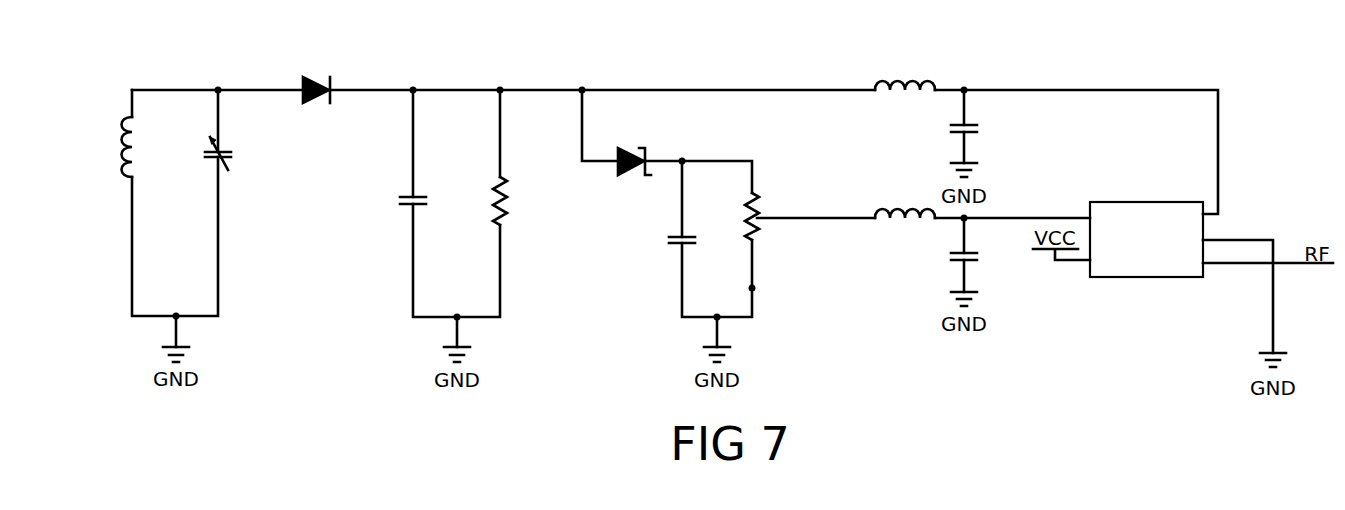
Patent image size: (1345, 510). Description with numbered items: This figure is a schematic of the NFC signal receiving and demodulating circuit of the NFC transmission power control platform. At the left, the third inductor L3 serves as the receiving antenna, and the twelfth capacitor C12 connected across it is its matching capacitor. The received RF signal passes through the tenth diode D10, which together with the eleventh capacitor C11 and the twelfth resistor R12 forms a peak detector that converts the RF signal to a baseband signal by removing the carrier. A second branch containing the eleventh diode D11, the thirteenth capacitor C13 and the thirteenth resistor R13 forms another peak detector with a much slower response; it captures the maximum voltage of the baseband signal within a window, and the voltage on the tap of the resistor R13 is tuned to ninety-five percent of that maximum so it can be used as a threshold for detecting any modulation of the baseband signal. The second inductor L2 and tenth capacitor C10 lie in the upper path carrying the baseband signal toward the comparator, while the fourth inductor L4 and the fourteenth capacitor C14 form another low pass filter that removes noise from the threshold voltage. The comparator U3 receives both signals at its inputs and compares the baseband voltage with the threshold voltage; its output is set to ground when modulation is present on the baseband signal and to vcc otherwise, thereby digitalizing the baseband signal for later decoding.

The third inductor L3 is at (142, 147).
The twelfth capacitor C12 is at (241, 153).
The tenth diode D10 is at (316, 77).
The eleventh capacitor C11 is at (427, 202).
The twelfth resistor R12 is at (515, 201).
The eleventh diode D11 is at (633, 149).
The thirteenth capacitor C13 is at (658, 241).
The thirteenth resistor R13 is at (731, 216).
The second inductor L2 is at (905, 101).
The tenth capacitor C10 is at (984, 130).
The fourth inductor L4 is at (905, 230).
The fourteenth capacitor C14 is at (984, 260).
The comparator U3 is at (1146, 228).